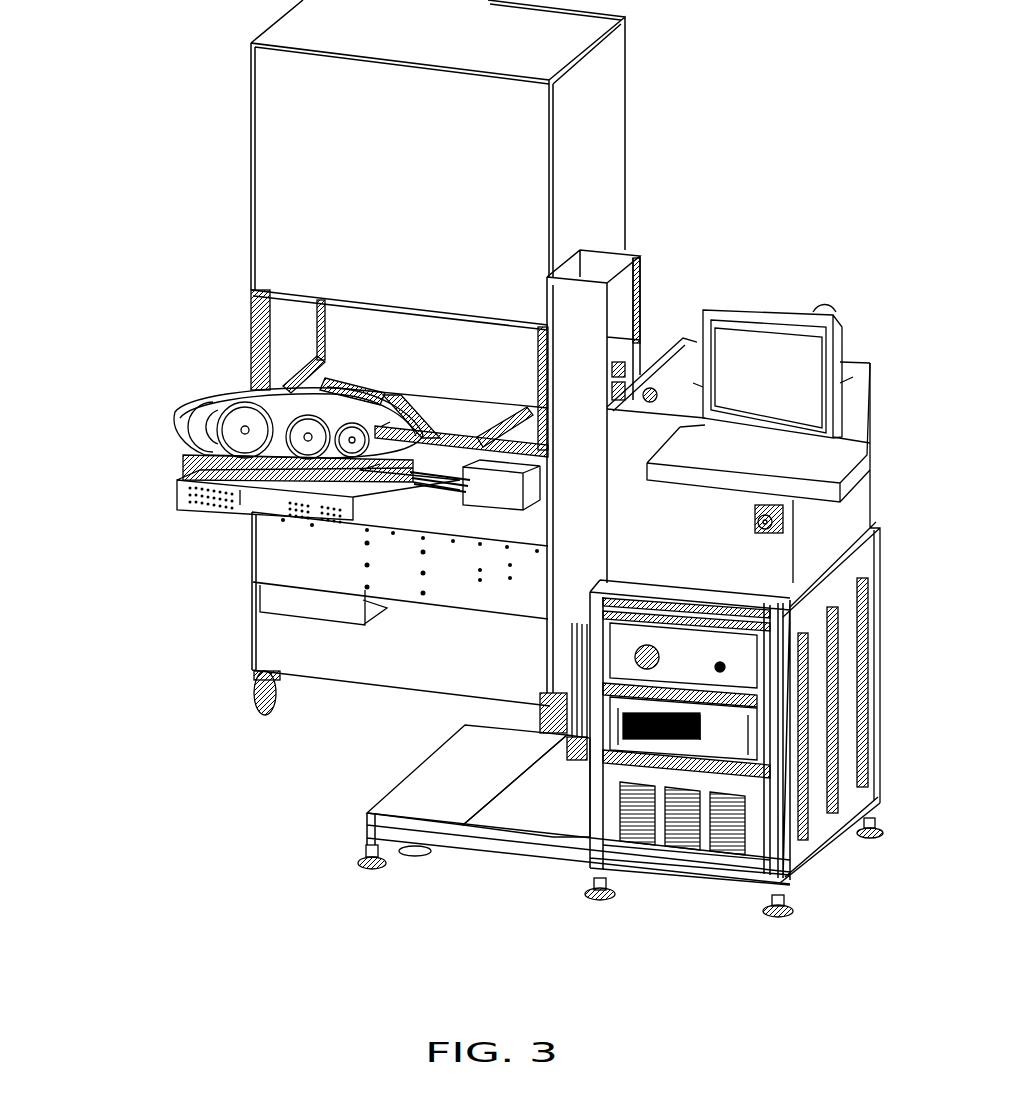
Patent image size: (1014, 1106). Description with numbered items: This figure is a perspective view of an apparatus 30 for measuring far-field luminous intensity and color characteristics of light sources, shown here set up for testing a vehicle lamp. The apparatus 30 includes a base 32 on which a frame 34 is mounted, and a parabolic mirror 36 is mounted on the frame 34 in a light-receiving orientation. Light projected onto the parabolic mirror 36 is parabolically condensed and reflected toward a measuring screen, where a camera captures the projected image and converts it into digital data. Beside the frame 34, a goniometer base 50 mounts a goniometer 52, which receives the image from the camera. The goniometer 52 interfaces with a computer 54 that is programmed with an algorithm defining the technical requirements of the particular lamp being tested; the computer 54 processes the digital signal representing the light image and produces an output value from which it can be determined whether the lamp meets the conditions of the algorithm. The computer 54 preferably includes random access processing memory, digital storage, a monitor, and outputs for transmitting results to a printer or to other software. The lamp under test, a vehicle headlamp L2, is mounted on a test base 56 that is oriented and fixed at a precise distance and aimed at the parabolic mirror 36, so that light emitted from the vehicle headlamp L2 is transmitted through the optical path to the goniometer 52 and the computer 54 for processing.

The apparatus 30 is at (158, 176).
The base 32 is at (445, 415).
The frame 34 is at (287, 128).
The parabolic mirror 36 is at (452, 345).
The goniometer base 50 is at (280, 633).
The goniometer 52 is at (613, 340).
The computer 54 is at (803, 417).
The test base 56 is at (190, 498).
The vehicle headlamp L2 is at (205, 420).